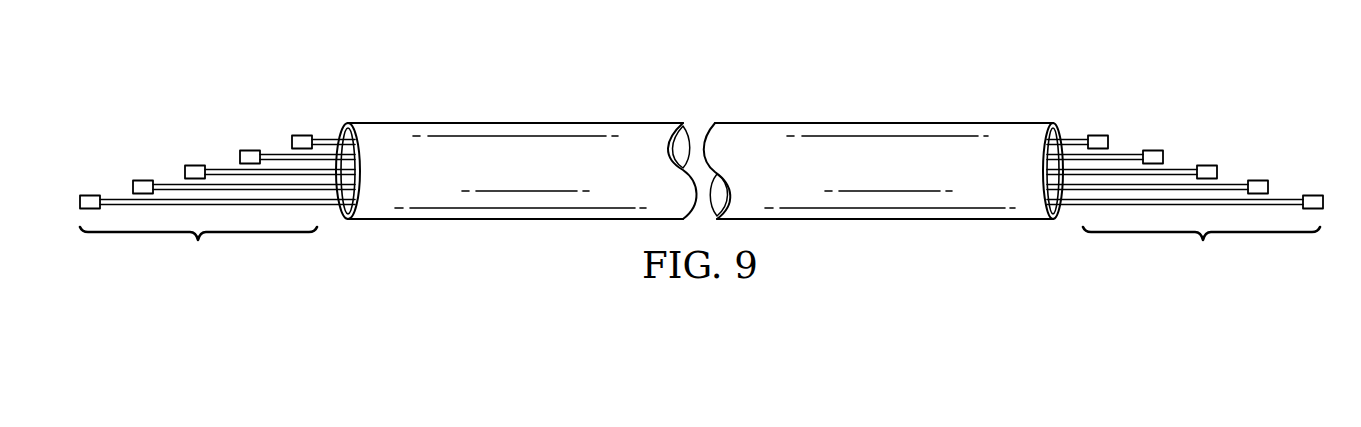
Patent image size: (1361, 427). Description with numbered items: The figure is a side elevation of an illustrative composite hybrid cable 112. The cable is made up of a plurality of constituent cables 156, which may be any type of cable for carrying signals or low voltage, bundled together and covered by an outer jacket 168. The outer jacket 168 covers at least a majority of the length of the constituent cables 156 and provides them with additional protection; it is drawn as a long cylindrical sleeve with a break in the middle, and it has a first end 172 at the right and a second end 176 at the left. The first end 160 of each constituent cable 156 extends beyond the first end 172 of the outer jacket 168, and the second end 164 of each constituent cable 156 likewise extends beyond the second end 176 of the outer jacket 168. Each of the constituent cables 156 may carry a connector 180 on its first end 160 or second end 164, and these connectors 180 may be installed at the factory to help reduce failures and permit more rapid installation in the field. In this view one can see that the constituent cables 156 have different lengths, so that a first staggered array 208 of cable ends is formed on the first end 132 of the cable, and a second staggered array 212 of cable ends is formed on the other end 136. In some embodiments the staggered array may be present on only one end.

The composite hybrid cable 112 is at (550, 123).
The outer jacket 168 is at (893, 123).
The second end of the outer jacket 176 is at (337, 133).
The first end of the outer jacket 172 is at (1062, 133).
The constituent cables 156 is at (157, 182).
The connector 180 is at (93, 195).
The second staggered array 212 is at (198, 250).
The first staggered array 208 is at (1201, 250).
The other end 136 is at (107, 78).
The second end of constituent cable 164 is at (134, 106).
The first end 132 is at (1296, 76).
The first end of constituent cable 160 is at (1270, 104).